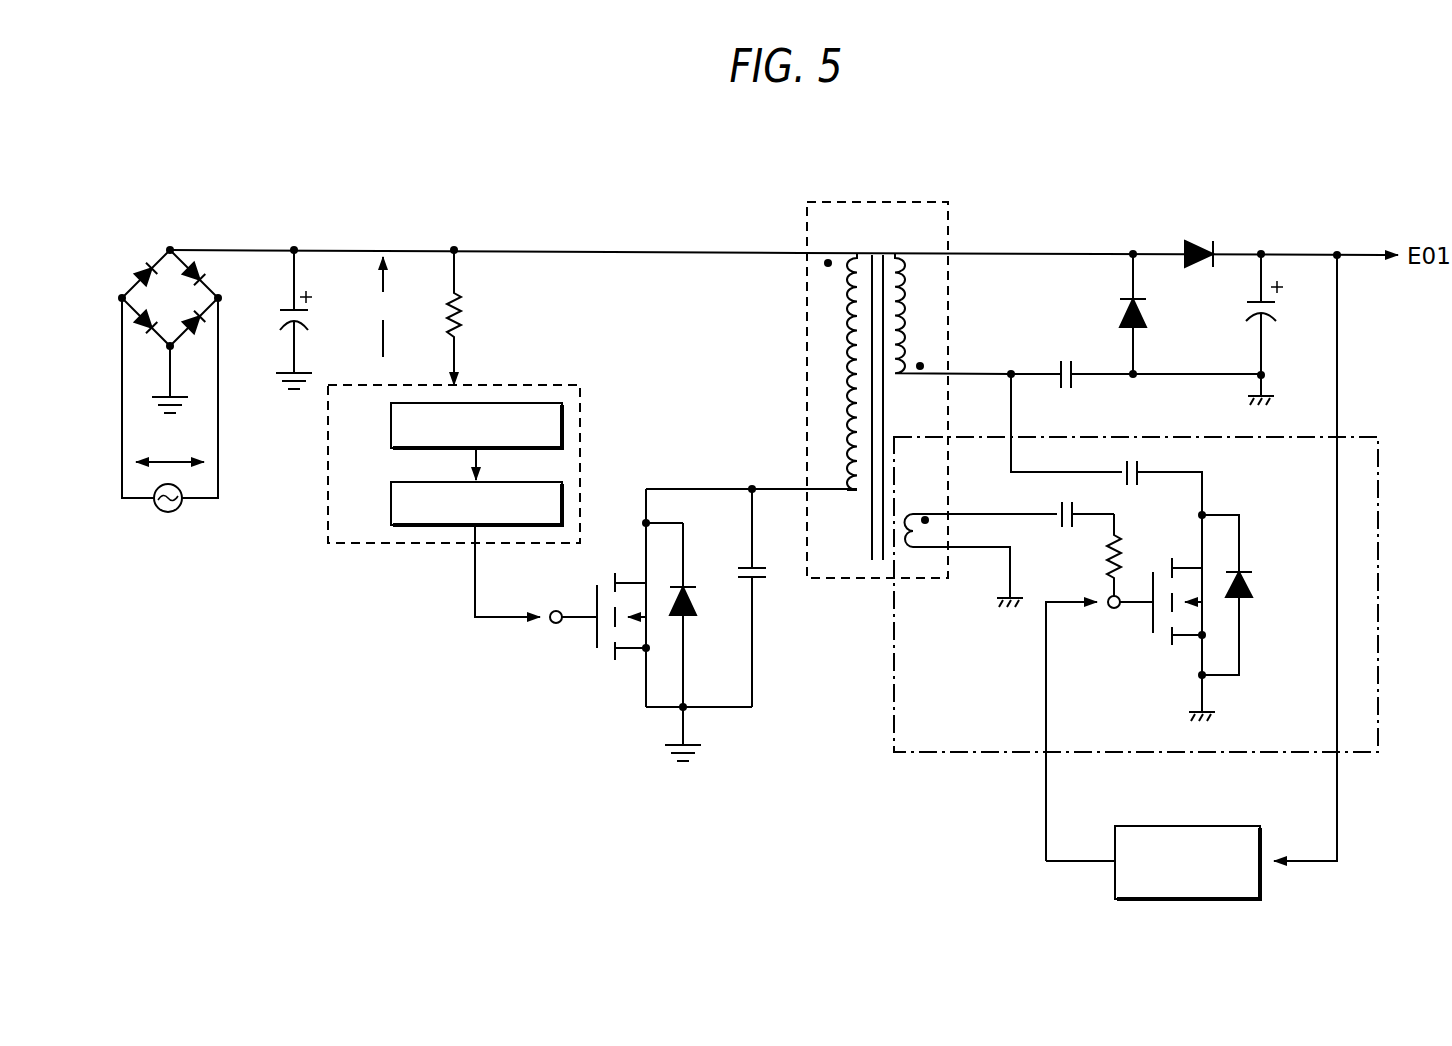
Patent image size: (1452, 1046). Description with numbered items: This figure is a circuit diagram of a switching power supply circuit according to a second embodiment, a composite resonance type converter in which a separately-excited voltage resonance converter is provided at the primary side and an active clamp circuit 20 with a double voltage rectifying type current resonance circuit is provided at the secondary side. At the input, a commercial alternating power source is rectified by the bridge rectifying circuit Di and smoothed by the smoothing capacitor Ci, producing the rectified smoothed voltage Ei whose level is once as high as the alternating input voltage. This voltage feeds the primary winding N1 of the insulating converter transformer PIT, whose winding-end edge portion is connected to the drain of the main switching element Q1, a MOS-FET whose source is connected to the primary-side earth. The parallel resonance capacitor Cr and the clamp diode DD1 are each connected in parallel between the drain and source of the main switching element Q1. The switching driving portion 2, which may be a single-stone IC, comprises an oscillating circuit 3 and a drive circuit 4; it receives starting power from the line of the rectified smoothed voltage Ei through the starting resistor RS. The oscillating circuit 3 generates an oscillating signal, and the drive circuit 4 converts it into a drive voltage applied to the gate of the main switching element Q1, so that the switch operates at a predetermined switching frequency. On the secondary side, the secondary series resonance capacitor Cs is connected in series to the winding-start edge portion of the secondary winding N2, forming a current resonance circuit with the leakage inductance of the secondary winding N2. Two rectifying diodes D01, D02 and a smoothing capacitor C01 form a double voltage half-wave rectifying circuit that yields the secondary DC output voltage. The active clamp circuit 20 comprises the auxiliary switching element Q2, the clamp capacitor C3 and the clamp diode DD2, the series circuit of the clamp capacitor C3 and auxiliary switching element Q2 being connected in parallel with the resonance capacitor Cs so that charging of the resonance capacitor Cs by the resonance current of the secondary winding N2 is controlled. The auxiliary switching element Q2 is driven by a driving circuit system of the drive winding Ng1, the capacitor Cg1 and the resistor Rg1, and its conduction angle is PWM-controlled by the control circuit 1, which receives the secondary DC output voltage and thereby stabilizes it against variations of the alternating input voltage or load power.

The control circuit 1 is at (1184, 826).
The switching driving portion 2 is at (328, 466).
The oscillating circuit 3 is at (391, 428).
The drive circuit 4 is at (391, 508).
The active clamp circuit 20 is at (894, 684).
The bridge rectifying circuit Di is at (170, 393).
The smoothing capacitor Ci is at (281, 317).
The rectified smoothed voltage Ei is at (383, 307).
The starting resistor RS is at (473, 315).
The main switching element Q1 is at (666, 598).
The clamp diode DD1 is at (699, 642).
The parallel resonance capacitor Cr is at (762, 596).
The insulating converter transformer PIT is at (880, 390).
The primary winding N1 is at (840, 297).
The secondary winding N2 is at (917, 298).
The rectifying diode D01 is at (1200, 238).
The rectifying diode D02 is at (1160, 314).
The secondary series resonance capacitor Cs is at (1134, 360).
The smoothing capacitor C01 is at (1287, 327).
The clamp capacitor C3 is at (1164, 514).
The drive winding Ng1 is at (938, 526).
The capacitor Cg1 is at (1079, 530).
The resistor Rg1 is at (1140, 555).
The auxiliary switching element Q2 is at (1130, 686).
The clamp diode DD2 is at (1250, 595).